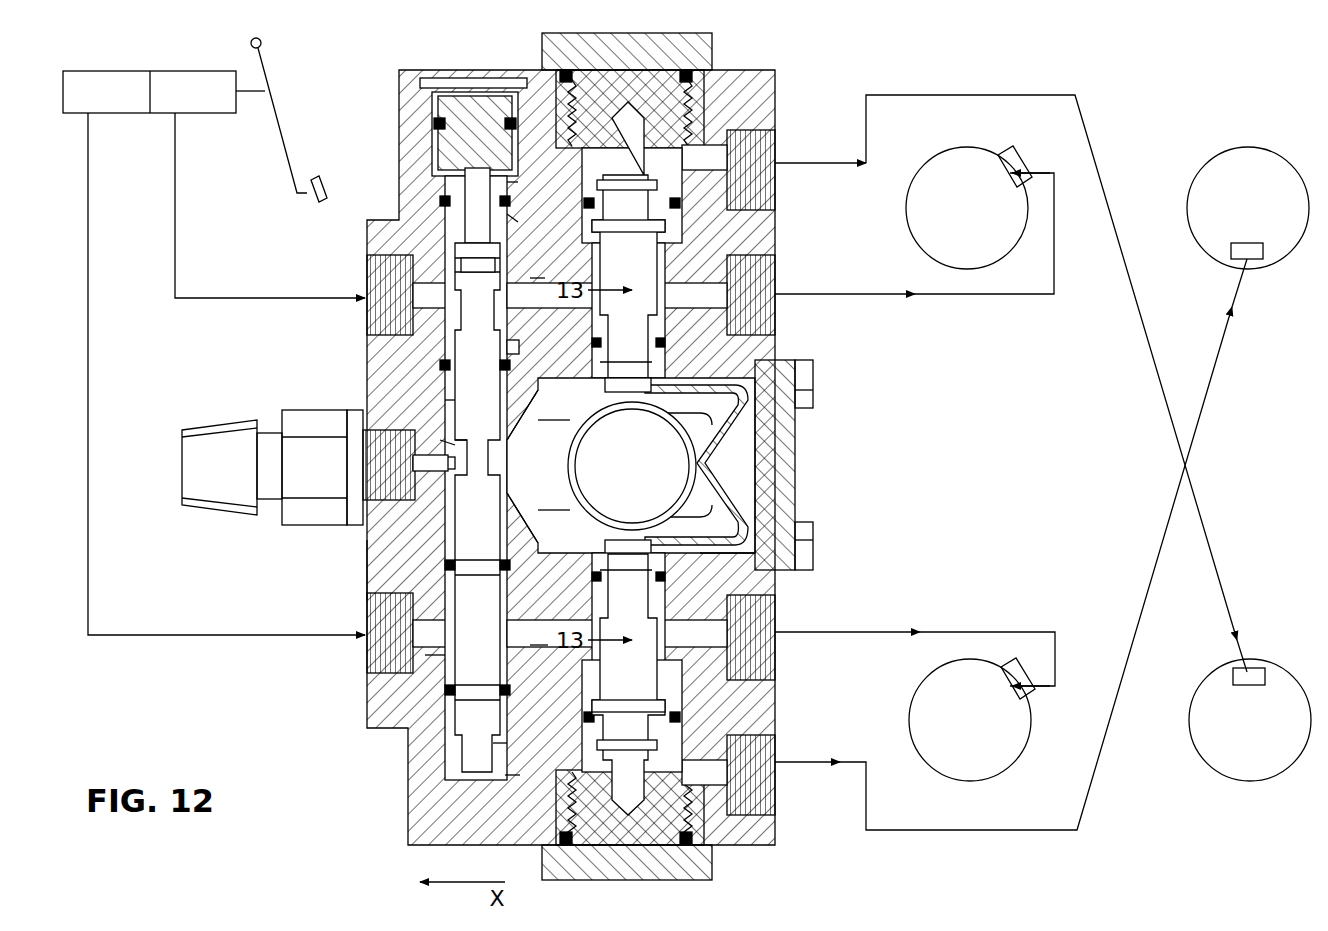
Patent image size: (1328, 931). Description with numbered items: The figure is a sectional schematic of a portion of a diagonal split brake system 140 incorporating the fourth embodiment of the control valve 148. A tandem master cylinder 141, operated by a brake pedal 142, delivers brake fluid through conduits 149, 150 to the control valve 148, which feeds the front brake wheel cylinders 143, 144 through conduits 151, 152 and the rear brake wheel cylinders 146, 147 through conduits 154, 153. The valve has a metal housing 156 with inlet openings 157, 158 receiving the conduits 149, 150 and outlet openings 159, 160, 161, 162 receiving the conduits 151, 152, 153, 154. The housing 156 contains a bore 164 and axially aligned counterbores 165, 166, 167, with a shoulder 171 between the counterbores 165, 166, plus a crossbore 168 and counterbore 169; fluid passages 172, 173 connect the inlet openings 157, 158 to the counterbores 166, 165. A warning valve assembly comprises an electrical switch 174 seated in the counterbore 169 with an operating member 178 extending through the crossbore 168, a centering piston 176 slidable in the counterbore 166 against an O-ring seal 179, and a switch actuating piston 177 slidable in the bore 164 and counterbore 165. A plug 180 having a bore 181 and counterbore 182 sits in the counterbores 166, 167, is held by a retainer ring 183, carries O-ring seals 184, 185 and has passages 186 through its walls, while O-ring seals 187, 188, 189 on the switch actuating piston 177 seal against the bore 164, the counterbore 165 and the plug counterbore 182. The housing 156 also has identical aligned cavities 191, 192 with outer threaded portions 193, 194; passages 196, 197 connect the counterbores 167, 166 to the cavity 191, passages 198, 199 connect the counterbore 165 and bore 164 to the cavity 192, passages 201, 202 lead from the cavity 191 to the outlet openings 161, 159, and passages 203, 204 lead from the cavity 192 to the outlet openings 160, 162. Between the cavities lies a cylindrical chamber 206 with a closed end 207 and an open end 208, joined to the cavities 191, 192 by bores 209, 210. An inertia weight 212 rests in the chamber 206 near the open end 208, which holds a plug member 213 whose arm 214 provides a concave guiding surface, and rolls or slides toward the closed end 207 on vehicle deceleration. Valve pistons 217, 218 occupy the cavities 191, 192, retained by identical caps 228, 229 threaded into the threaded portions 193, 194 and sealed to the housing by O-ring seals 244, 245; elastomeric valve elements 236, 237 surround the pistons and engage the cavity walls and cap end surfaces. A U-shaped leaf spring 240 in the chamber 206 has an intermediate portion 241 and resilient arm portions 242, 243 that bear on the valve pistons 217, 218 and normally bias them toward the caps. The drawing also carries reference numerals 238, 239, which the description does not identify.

The brake system portion 140 is at (905, 62).
The tandem master cylinder 141 is at (95, 80).
The brake pedal 142 is at (287, 163).
The front brake wheel cylinder 143 is at (969, 207).
The front brake wheel cylinder 144 is at (972, 719).
The rear brake wheel cylinder 146 is at (1248, 208).
The rear brake wheel cylinder 147 is at (1250, 720).
The control valve 148 is at (405, 832).
The conduit 149 is at (254, 297).
The conduit 150 is at (88, 558).
The conduit 151 is at (973, 296).
The conduit 152 is at (975, 630).
The conduit 153 is at (1093, 142).
The conduit 154 is at (1093, 787).
The housing 156 is at (365, 560).
The inlet opening 157 is at (370, 318).
The inlet opening 158 is at (372, 665).
The outlet opening 159 is at (772, 325).
The outlet opening 160 is at (772, 665).
The outlet opening 161 is at (772, 190).
The outlet opening 162 is at (772, 790).
The bore 164 is at (493, 743).
The counterbore 165 is at (510, 603).
The counterbore 166 is at (514, 348).
The counterbore 167 is at (510, 185).
The crossbore 168 is at (400, 492).
The counterbore 169 is at (385, 505).
The shoulder 171 is at (514, 430).
The fluid passage 172 is at (440, 380).
The fluid passage 173 is at (427, 658).
The electrical switch 174 is at (272, 467).
The centering piston 176 is at (442, 402).
The switch actuating piston 177 is at (477, 507).
The operating member 178 is at (440, 445).
The O-ring seal 179 is at (440, 366).
The plug 180 is at (475, 133).
The bore 181 is at (440, 203).
The counterbore 182 is at (458, 263).
The retainer ring 183 is at (430, 80).
The O-ring seal 184 is at (509, 217).
The O-ring seal 185 is at (433, 124).
The passages 186 is at (468, 185).
The O-ring seal 187 is at (508, 690).
The O-ring seal 188 is at (445, 565).
The O-ring seal 189 is at (514, 310).
The cavity 191 is at (667, 230).
The cavity 192 is at (667, 695).
The threaded portion 193 is at (690, 100).
The threaded portion 194 is at (570, 808).
The passage 196 is at (543, 150).
The passage 197 is at (538, 278).
The passage 198 is at (545, 645).
The passage 199 is at (505, 775).
The passage 201 is at (700, 147).
The passage 202 is at (694, 284).
The passage 203 is at (690, 622).
The passage 204 is at (696, 780).
The cylindrical chamber 206 is at (552, 548).
The closed end 207 is at (527, 503).
The open end 208 is at (740, 553).
The bore 209 is at (655, 363).
The bore 210 is at (658, 570).
The inertia weight 212 is at (632, 466).
The plug member 213 is at (785, 487).
The arm 214 is at (745, 465).
The valve piston 217 is at (628, 240).
The valve piston 218 is at (628, 684).
The cap 228 is at (663, 38).
The cap 229 is at (693, 872).
The elastomeric valve element 236 is at (680, 205).
The elastomeric valve element 237 is at (680, 718).
The upper bore seal 238 is at (665, 343).
The lower bore seal 239 is at (600, 575).
The leaf spring 240 is at (790, 437).
The intermediate portion 241 is at (690, 474).
The resilient arm portion 242 is at (626, 410).
The resilient arm portion 243 is at (607, 538).
The O-ring seal 244 is at (565, 70).
The O-ring seal 245 is at (575, 832).